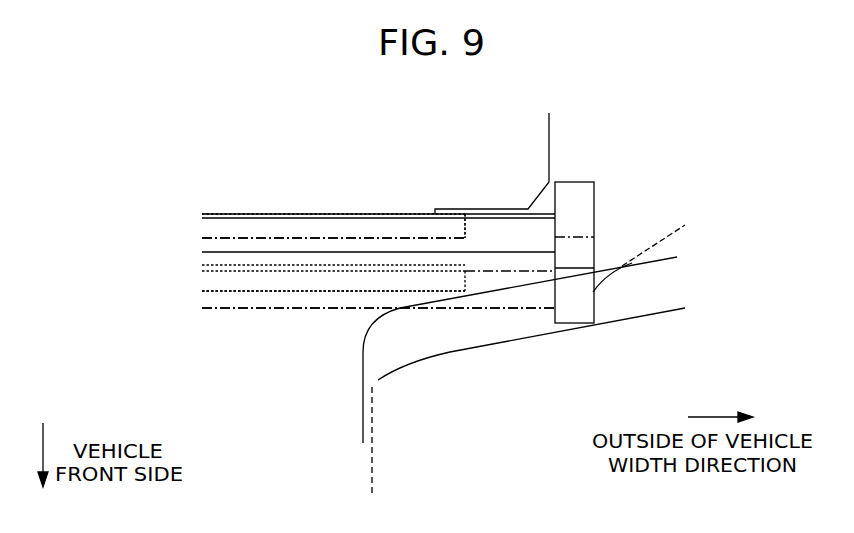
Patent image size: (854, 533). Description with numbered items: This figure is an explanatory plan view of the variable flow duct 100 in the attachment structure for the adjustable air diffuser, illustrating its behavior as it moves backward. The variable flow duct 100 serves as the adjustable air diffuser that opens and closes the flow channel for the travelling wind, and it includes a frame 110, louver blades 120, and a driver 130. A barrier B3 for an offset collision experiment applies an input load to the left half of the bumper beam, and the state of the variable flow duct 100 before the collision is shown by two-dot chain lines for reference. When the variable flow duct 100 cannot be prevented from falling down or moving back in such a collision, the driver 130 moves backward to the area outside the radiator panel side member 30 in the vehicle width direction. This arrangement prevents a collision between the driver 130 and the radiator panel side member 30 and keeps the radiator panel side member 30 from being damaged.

The radiator panel side member 30 is at (549, 145).
The variable flow duct 100 is at (233, 253).
The frame 110 is at (250, 308).
The louver blades 120 is at (376, 258).
The driver 130 is at (594, 222).
The barrier B3 is at (378, 381).